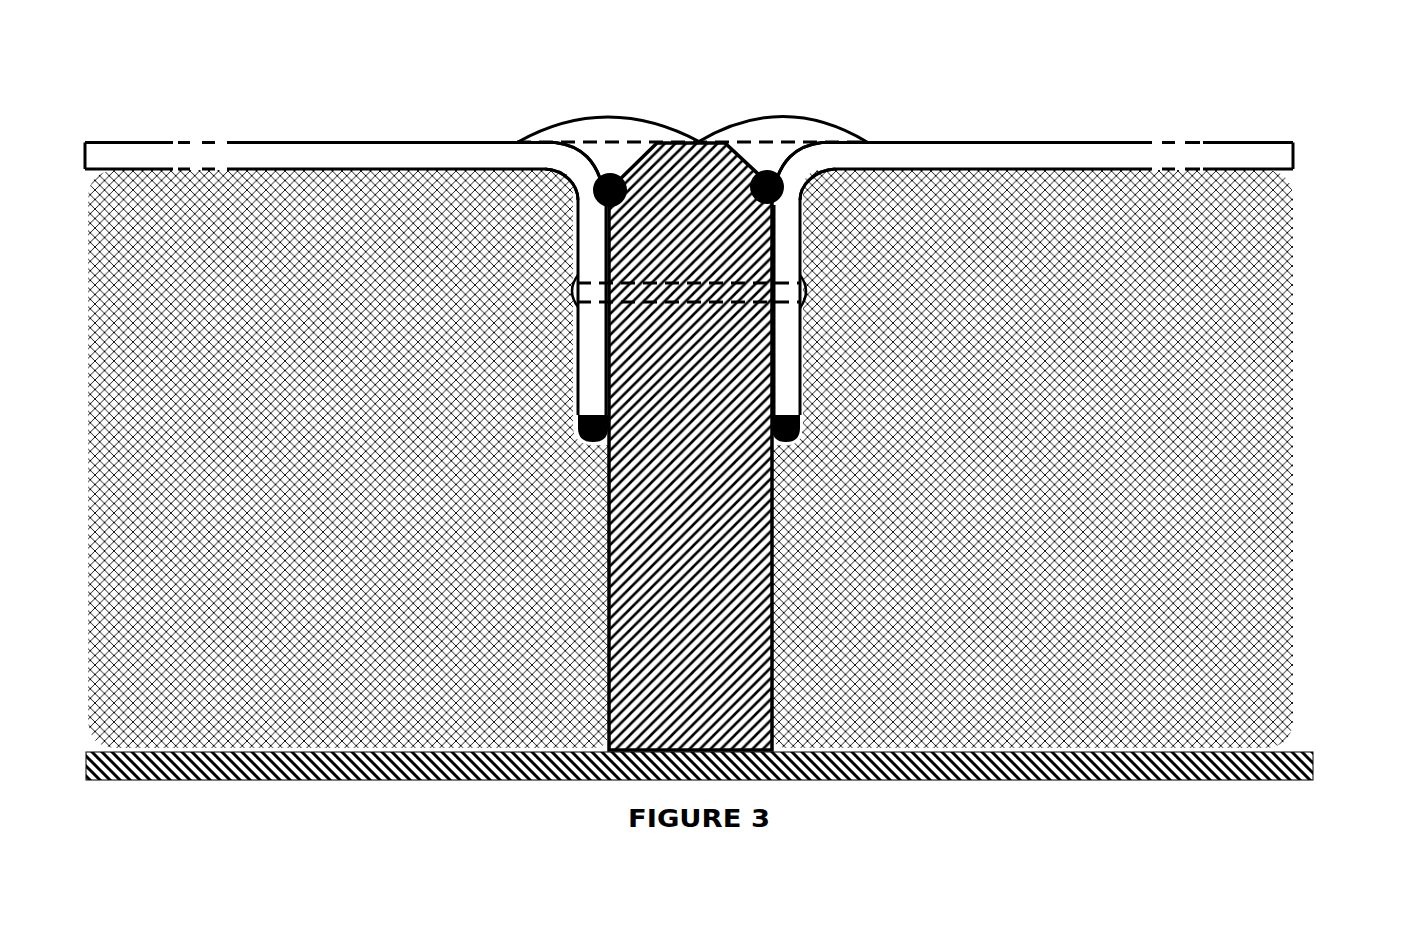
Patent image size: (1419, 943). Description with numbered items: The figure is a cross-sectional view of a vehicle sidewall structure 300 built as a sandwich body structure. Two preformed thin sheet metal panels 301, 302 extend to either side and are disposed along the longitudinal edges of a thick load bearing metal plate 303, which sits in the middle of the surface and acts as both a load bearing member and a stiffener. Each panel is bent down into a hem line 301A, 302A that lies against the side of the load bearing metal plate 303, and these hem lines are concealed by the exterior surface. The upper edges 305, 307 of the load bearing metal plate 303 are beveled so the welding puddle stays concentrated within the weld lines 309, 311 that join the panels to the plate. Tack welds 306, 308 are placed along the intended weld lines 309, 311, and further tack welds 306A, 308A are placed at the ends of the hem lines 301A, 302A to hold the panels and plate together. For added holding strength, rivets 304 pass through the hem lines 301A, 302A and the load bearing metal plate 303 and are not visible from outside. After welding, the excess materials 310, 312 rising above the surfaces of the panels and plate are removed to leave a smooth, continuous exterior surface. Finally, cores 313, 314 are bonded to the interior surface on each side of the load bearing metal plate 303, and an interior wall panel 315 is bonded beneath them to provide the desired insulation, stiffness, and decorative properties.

The vehicle sidewall structure 300 is at (955, 87).
The sheet metal panel 301 is at (405, 152).
The sheet metal panel 302 is at (1048, 150).
The hem line 301A is at (592, 343).
The hem line 302A is at (787, 350).
The load bearing metal plate 303 is at (732, 555).
The rivets 304 is at (565, 293).
The edge 305 is at (637, 157).
The tack welds 306 is at (572, 207).
The tack welds 306A is at (582, 432).
The edge 307 is at (803, 180).
The tack welds 308 is at (807, 215).
The tack welds 308A is at (792, 432).
The weld line 309 is at (600, 130).
The excess material 310 is at (630, 117).
The weld line 311 is at (793, 130).
The excess material 312 is at (782, 115).
The core 313 is at (133, 494).
The core 314 is at (1265, 473).
The interior wall panel 315 is at (1285, 768).